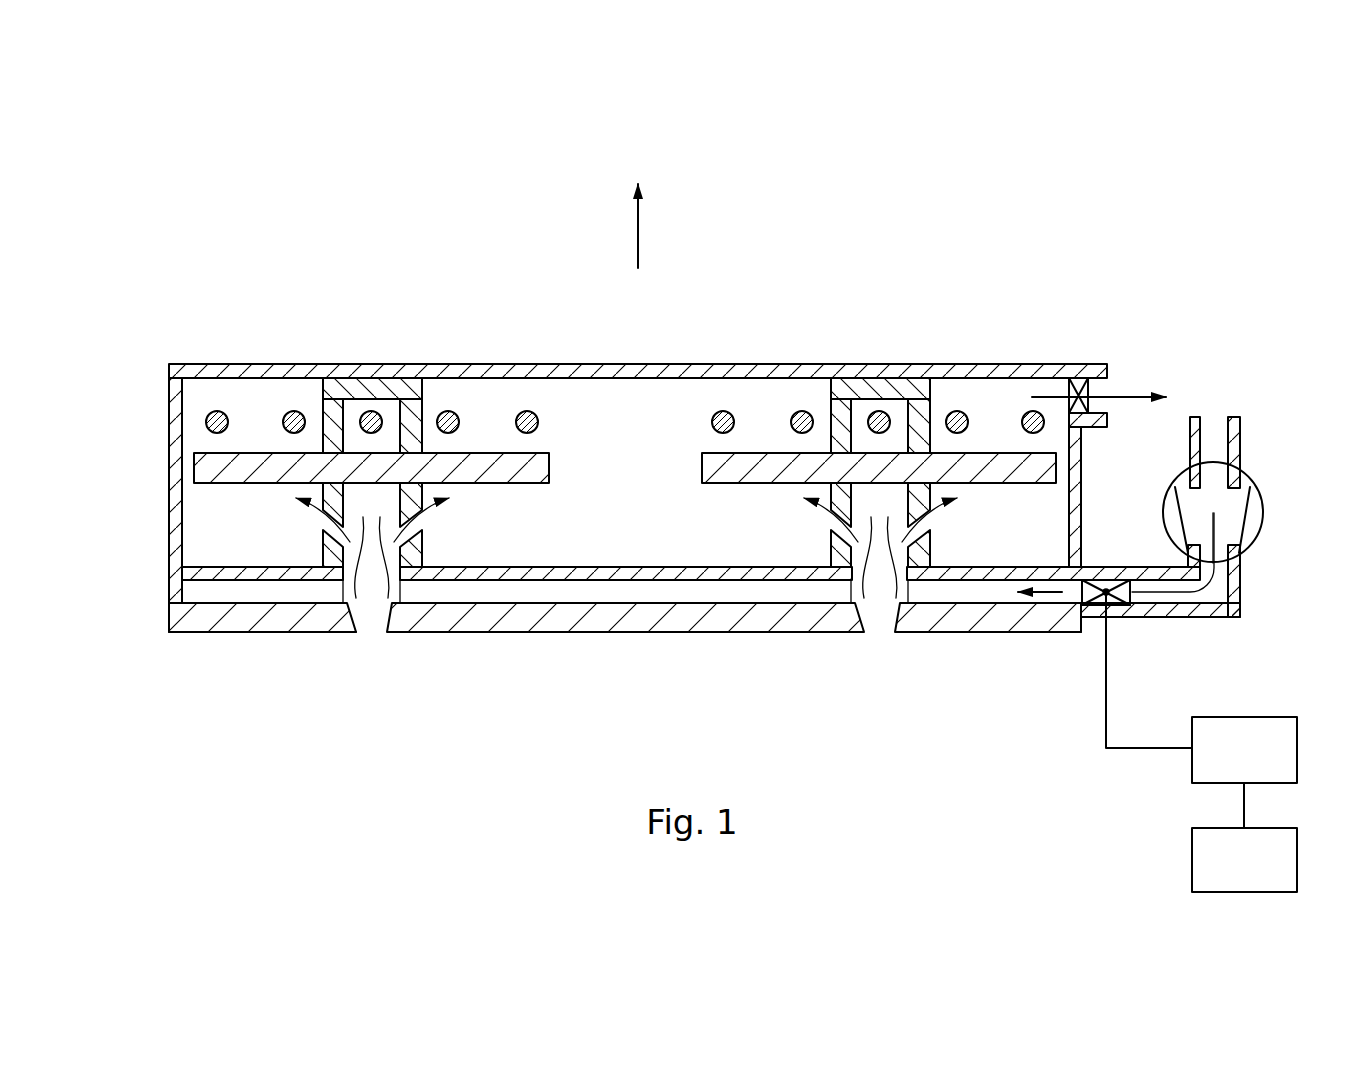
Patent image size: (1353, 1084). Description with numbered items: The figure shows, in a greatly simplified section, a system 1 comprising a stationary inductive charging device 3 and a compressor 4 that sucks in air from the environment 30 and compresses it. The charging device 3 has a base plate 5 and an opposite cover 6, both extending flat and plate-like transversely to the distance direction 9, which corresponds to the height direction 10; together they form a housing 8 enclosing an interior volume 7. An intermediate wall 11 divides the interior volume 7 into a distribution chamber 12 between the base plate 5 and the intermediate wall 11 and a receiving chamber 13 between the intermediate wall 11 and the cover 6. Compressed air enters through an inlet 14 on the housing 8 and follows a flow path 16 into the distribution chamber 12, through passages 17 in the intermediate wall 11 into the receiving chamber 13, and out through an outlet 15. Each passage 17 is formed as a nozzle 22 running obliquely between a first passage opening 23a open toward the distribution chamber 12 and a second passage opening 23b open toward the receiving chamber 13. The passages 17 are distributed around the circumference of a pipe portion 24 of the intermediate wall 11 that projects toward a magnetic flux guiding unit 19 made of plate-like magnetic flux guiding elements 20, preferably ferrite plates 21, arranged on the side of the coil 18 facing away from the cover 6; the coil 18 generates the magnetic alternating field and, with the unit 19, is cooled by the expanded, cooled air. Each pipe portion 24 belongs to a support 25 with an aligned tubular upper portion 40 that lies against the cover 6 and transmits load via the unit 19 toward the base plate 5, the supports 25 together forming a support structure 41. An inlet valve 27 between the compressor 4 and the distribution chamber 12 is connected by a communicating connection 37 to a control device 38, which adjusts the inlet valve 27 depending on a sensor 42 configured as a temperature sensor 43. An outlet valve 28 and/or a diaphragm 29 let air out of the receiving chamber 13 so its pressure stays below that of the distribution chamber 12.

The system 1 is at (1127, 246).
The stationary inductive charging device 3 is at (546, 243).
The compressor 4 is at (1244, 468).
The base plate 5 is at (542, 633).
The cover 6 is at (592, 362).
The interior volume 7 is at (691, 596).
The housing 8 is at (481, 636).
The distance direction 9 is at (687, 226).
The height direction 10 is at (640, 232).
The intermediate wall 11 is at (591, 583).
The distribution chamber 12 is at (634, 594).
The receiving chamber 13 is at (601, 537).
The inlet 14 is at (1079, 594).
The outlet 15 is at (1101, 389).
The flow path 16 is at (1134, 399).
The passage 17 is at (625, 546).
The coil 18 is at (204, 420).
The magnetic flux guiding unit 19 is at (193, 466).
The magnetic flux guiding element 20 is at (625, 466).
The ferrite plate 21 is at (702, 467).
The nozzle 22 is at (324, 543).
The first passage opening 23a is at (626, 541).
The second passage opening 23b is at (328, 515).
The pipe portion 24 is at (407, 587).
The support 25 is at (370, 376).
The inlet valve 27 is at (1123, 607).
The outlet valve 28 is at (1098, 359).
The diaphragm 29 is at (1079, 377).
The environment 30 is at (1226, 405).
The communicating connection 37 is at (1150, 750).
The control device 38 is at (1258, 765).
The upper portion 40 is at (424, 399).
The support structure 41 is at (313, 386).
The sensor 42 is at (1244, 860).
The temperature sensor 43 is at (1214, 875).